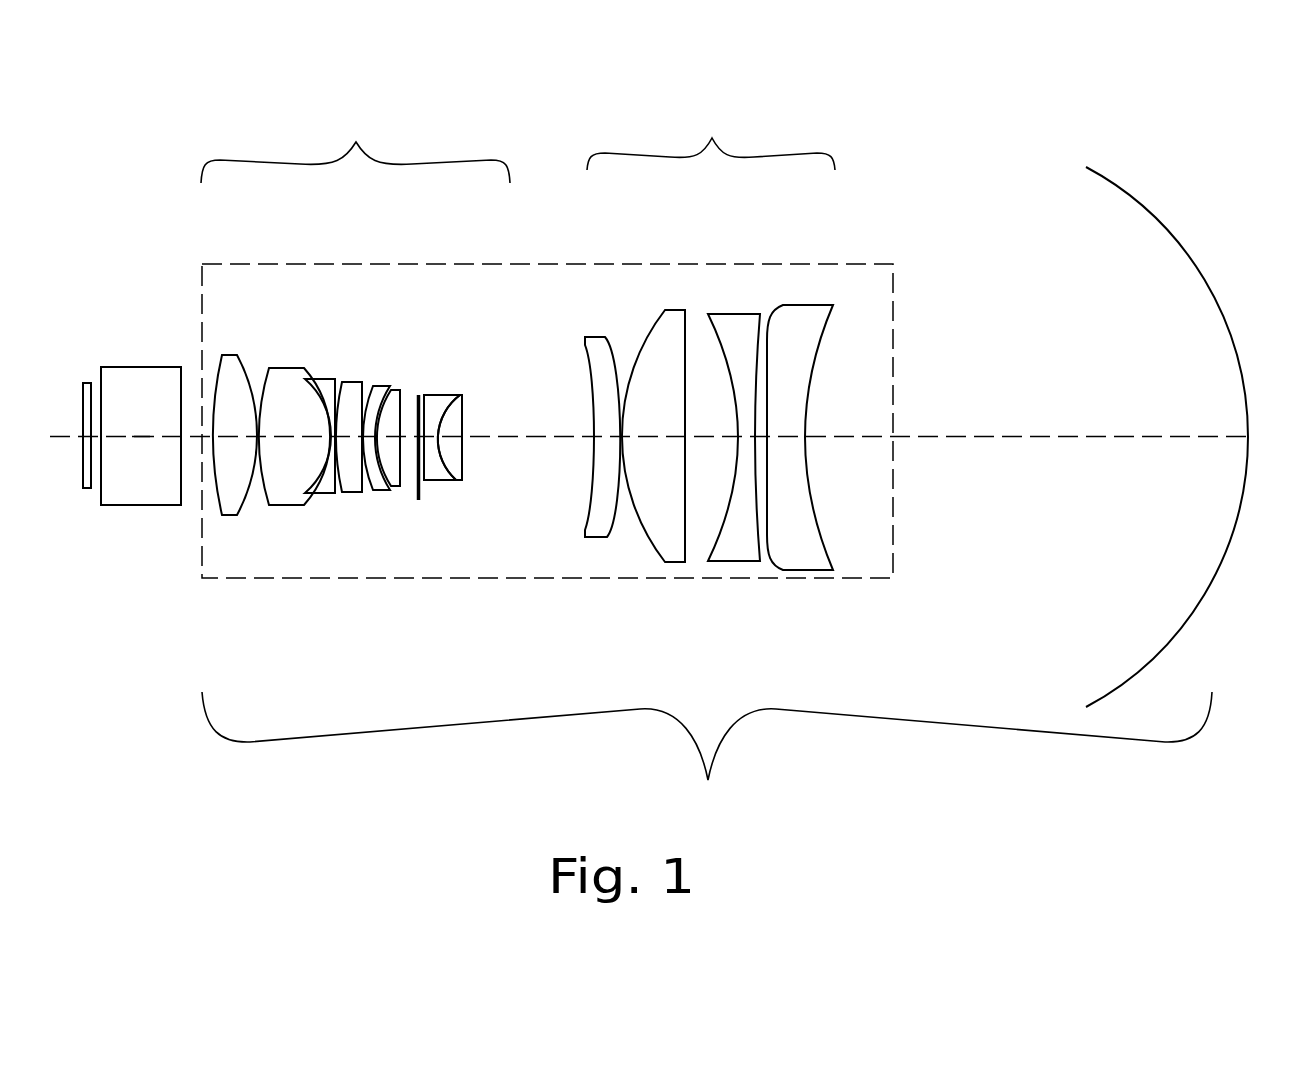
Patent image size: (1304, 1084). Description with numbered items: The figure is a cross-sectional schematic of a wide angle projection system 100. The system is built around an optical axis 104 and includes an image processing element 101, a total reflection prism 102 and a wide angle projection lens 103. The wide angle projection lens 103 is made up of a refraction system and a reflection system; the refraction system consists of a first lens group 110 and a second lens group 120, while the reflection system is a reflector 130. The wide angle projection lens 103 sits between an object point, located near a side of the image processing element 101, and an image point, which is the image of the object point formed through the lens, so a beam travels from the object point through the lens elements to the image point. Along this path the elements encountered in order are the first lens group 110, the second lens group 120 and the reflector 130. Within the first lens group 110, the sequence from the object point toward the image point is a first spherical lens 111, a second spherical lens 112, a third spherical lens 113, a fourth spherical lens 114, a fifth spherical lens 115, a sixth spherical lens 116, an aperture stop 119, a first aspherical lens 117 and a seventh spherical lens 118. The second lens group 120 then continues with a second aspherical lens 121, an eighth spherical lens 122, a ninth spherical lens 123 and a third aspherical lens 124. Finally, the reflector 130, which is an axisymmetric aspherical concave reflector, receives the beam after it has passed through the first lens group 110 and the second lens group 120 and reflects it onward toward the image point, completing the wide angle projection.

The wide angle projection system 100 is at (92, 123).
The image processing element 101 is at (87, 383).
The total reflection prism 102 is at (152, 367).
The wide angle projection lens 103 is at (707, 759).
The optical axis 104 is at (140, 437).
The first lens group 110 is at (355, 142).
The first spherical lens 111 is at (233, 355).
The second spherical lens 112 is at (288, 368).
The third spherical lens 113 is at (318, 379).
The fourth spherical lens 114 is at (353, 382).
The fifth spherical lens 115 is at (382, 386).
The sixth spherical lens 116 is at (394, 390).
The first aspherical lens 117 is at (440, 395).
The seventh spherical lens 118 is at (457, 395).
The aperture stop 119 is at (418, 500).
The second lens group 120 is at (711, 134).
The second aspherical lens 121 is at (592, 337).
The eighth spherical lens 122 is at (677, 310).
The ninth spherical lens 123 is at (737, 314).
The third aspherical lens 124 is at (817, 305).
The reflector 130 is at (1148, 214).